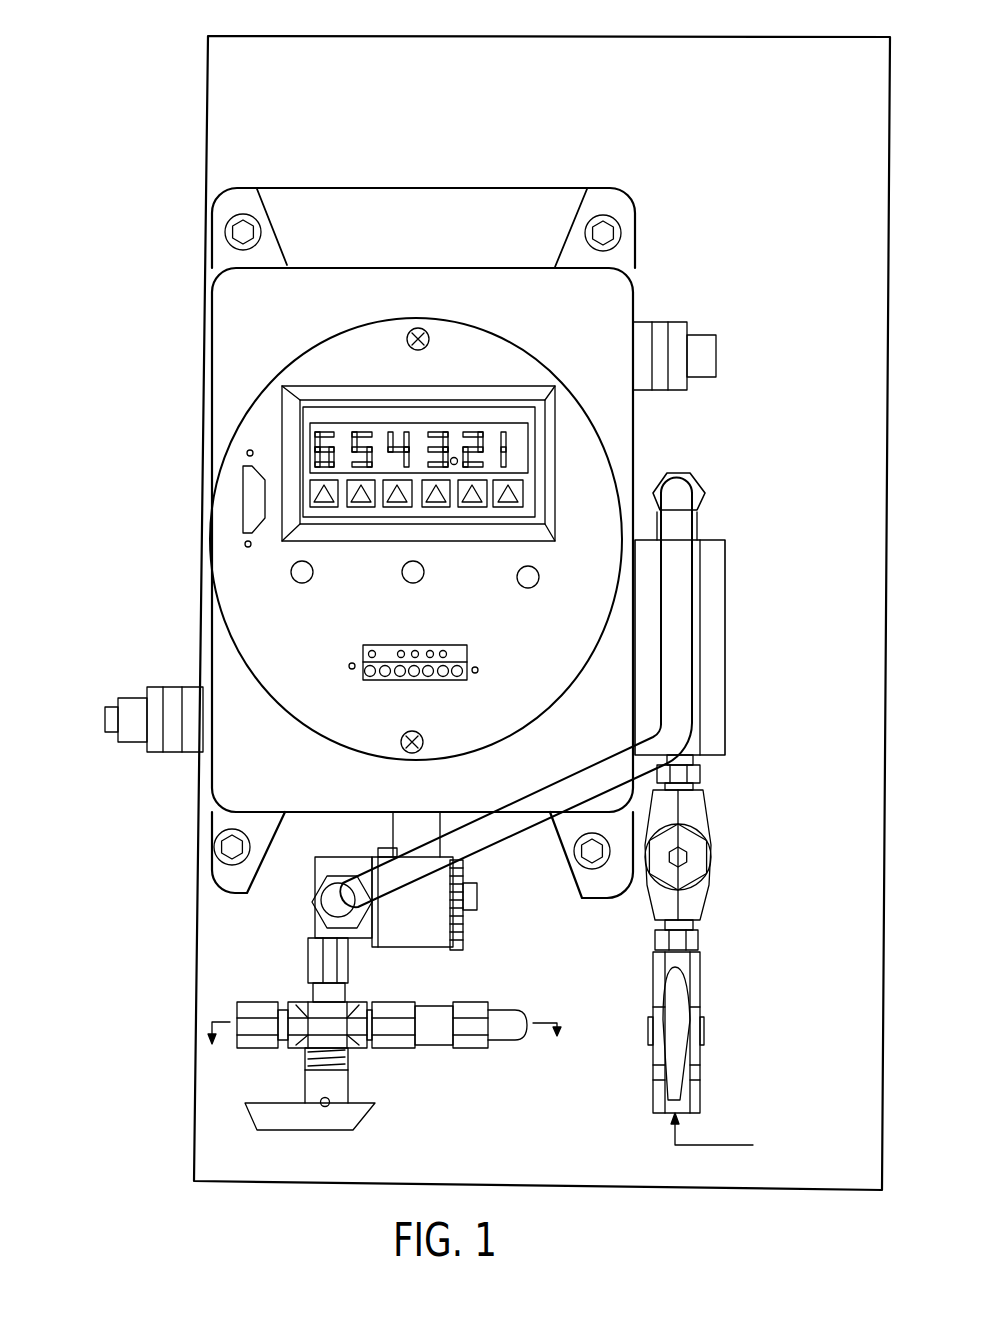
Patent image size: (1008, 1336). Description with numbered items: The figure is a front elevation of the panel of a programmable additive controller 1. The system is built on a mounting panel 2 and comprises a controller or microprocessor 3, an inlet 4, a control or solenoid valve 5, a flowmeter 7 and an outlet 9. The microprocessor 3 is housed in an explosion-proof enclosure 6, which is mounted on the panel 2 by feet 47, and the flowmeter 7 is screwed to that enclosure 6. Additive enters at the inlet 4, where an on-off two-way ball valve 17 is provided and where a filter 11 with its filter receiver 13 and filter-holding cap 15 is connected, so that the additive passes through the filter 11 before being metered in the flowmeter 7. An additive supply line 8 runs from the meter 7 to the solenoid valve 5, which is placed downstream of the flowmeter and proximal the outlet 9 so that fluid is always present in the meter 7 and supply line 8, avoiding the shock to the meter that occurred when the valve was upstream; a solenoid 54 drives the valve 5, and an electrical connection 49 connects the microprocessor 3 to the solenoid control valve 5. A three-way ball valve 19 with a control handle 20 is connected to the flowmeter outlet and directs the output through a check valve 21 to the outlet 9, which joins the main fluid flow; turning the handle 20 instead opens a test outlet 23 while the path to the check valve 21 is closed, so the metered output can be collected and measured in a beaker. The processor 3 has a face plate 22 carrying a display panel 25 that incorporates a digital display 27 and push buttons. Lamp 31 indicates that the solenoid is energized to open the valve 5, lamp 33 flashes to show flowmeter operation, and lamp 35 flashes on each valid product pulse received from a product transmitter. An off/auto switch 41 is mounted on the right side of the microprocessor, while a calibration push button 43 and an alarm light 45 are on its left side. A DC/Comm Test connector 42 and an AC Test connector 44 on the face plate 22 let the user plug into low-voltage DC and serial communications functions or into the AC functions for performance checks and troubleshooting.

The programmable additive controller 1 is at (162, 895).
The mounting panel 2 is at (192, 987).
The controller or microprocessor 3 is at (287, 354).
The inlet 4 is at (655, 1115).
The control or solenoid valve 5 is at (364, 932).
The explosion-proof enclosure 6 is at (632, 467).
The flowmeter 7 is at (722, 722).
The additive supply line 8 is at (531, 826).
The outlet 9 is at (537, 1030).
The filter 11 is at (718, 820).
The filter receiver 13 is at (703, 888).
The filter-holding cap 15 is at (698, 852).
The on-off, two-way ball valve 17 is at (703, 1033).
The three-way ball valve 19 is at (361, 1063).
The control handle 20 is at (350, 1132).
The check valve 21 is at (460, 1050).
The face plate 22 is at (528, 698).
The test outlet 23 is at (237, 1010).
The display panel 25 is at (556, 507).
The digital display 27 is at (488, 433).
The lamp 31 is at (304, 583).
The lamp 33 is at (414, 583).
The lamp 35 is at (534, 587).
The off/auto switch 41 is at (663, 318).
The DC/Comm Test connector 42 is at (240, 505).
The calibration push button 43 is at (137, 697).
The AC Test connector 44 is at (392, 682).
The alarm light 45 is at (106, 728).
The feet 47 is at (563, 853).
The electrical connection 49 is at (393, 828).
The solenoid 54 is at (467, 924).